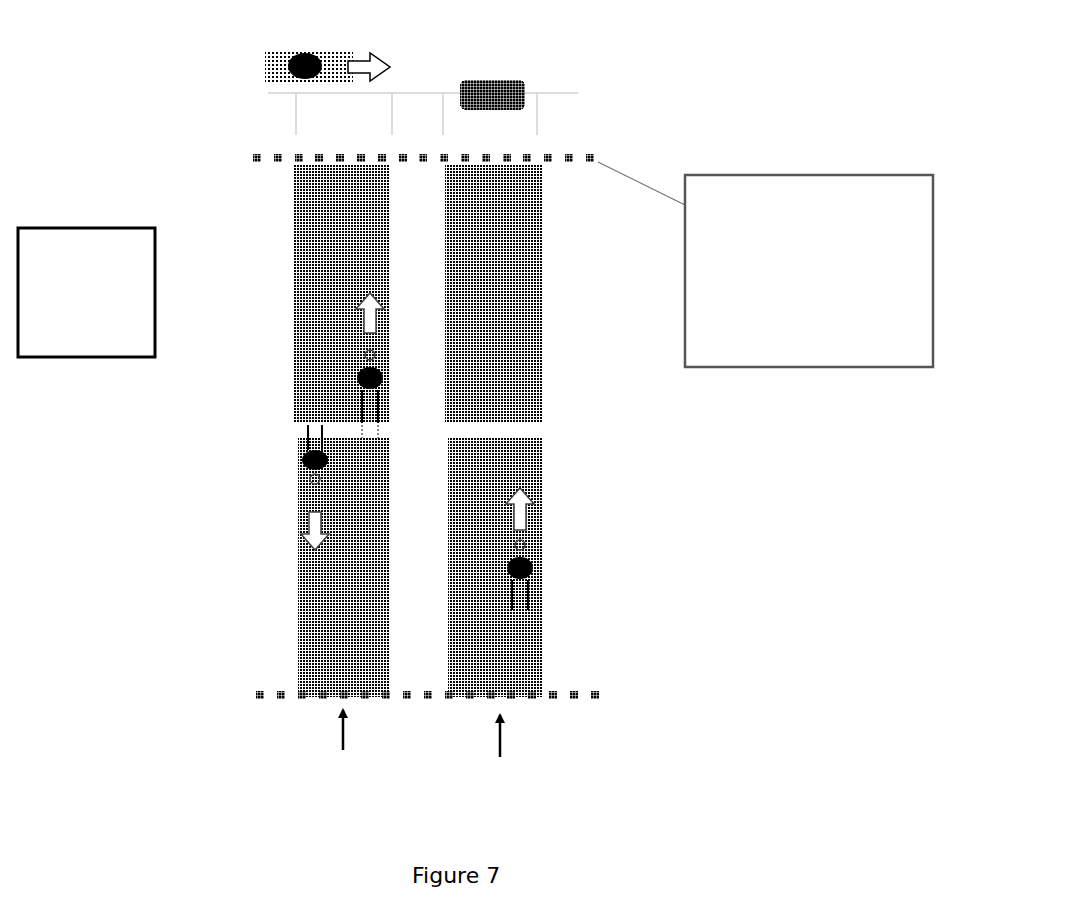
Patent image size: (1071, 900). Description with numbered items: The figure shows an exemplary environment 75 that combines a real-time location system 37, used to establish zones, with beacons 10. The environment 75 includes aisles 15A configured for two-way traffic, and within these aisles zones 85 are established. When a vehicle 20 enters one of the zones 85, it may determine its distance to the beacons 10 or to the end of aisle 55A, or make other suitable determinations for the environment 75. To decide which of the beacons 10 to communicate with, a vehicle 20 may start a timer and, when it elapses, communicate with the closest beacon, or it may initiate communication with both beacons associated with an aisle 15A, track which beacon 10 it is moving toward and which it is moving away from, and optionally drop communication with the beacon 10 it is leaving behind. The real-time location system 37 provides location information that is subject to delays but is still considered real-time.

The beacon 10 is at (525, 82).
The vehicle 20 is at (288, 71).
The zone 85 is at (312, 303).
The real-time location system 37 is at (86, 292).
The environment 75 is at (712, 143).
The end of aisle 55A is at (560, 148).
The aisle 15A is at (416, 751).